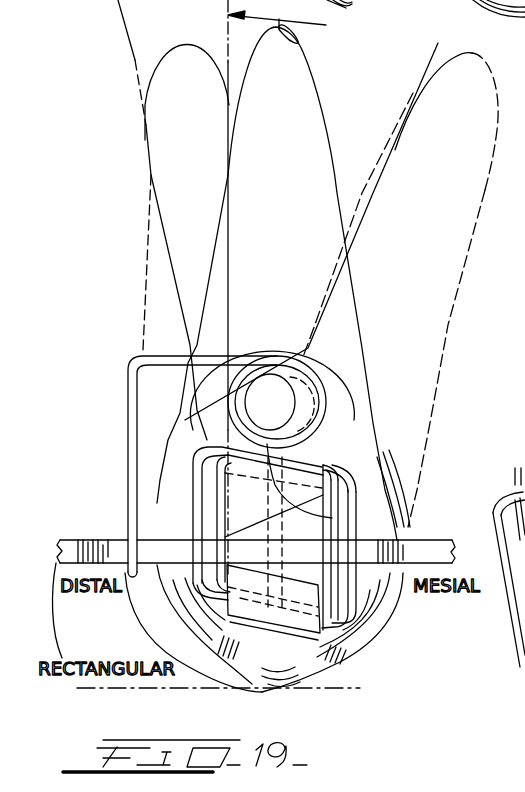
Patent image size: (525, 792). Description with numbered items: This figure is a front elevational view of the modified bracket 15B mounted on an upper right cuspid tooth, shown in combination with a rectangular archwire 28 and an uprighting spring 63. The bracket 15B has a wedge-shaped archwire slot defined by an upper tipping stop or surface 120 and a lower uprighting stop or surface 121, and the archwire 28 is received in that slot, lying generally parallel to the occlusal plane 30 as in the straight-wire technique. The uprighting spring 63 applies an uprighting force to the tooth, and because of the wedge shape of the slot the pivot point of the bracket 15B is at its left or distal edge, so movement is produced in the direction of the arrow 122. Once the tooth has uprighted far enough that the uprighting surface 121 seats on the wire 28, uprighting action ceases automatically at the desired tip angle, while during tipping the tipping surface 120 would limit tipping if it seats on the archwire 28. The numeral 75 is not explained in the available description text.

The modified bracket 15B is at (319, 457).
The rectangular archwire 28 is at (423, 540).
The occlusal plane 30 is at (178, 689).
The uprighting spring 63 is at (150, 357).
The tooth 75 is at (426, 8).
The upper tipping stop or surface 120 is at (323, 525).
The lower uprighting stop or surface 121 is at (285, 640).
The arrow 122 is at (298, 42).